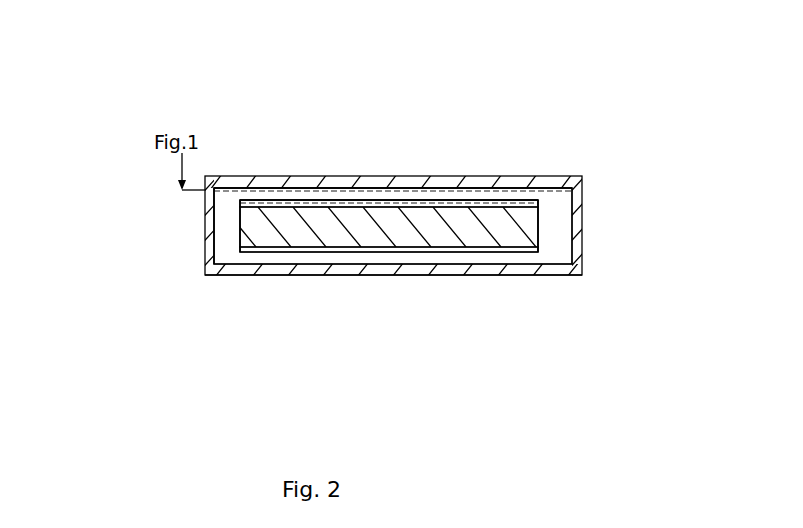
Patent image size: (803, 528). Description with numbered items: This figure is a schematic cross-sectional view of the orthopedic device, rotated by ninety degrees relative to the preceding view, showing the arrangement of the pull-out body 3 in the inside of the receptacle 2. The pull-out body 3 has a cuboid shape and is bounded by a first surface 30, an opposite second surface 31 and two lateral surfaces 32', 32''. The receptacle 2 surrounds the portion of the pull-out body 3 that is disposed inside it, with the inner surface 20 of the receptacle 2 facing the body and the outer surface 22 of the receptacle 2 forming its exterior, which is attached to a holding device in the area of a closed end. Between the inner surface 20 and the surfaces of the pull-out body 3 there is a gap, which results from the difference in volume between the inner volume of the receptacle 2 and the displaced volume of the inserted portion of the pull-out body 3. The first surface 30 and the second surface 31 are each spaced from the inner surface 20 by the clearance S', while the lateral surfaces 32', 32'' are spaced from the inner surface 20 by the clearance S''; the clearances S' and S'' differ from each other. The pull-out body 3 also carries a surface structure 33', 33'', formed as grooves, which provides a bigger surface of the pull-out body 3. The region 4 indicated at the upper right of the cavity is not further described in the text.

The receptacle 2 is at (585, 188).
The pull-out body 3 is at (263, 258).
The cavity 4 is at (550, 200).
The inner surface 20 is at (545, 264).
The outer surface 22 is at (552, 275).
The first surface 30 is at (355, 207).
The second surface 31 is at (382, 243).
The lateral surface 32' is at (648, 204).
The lateral surface 32'' is at (134, 207).
The structure 33' is at (404, 144).
The structure 33'' is at (389, 311).
The clearance S' is at (393, 173).
The clearance S'' is at (202, 226).